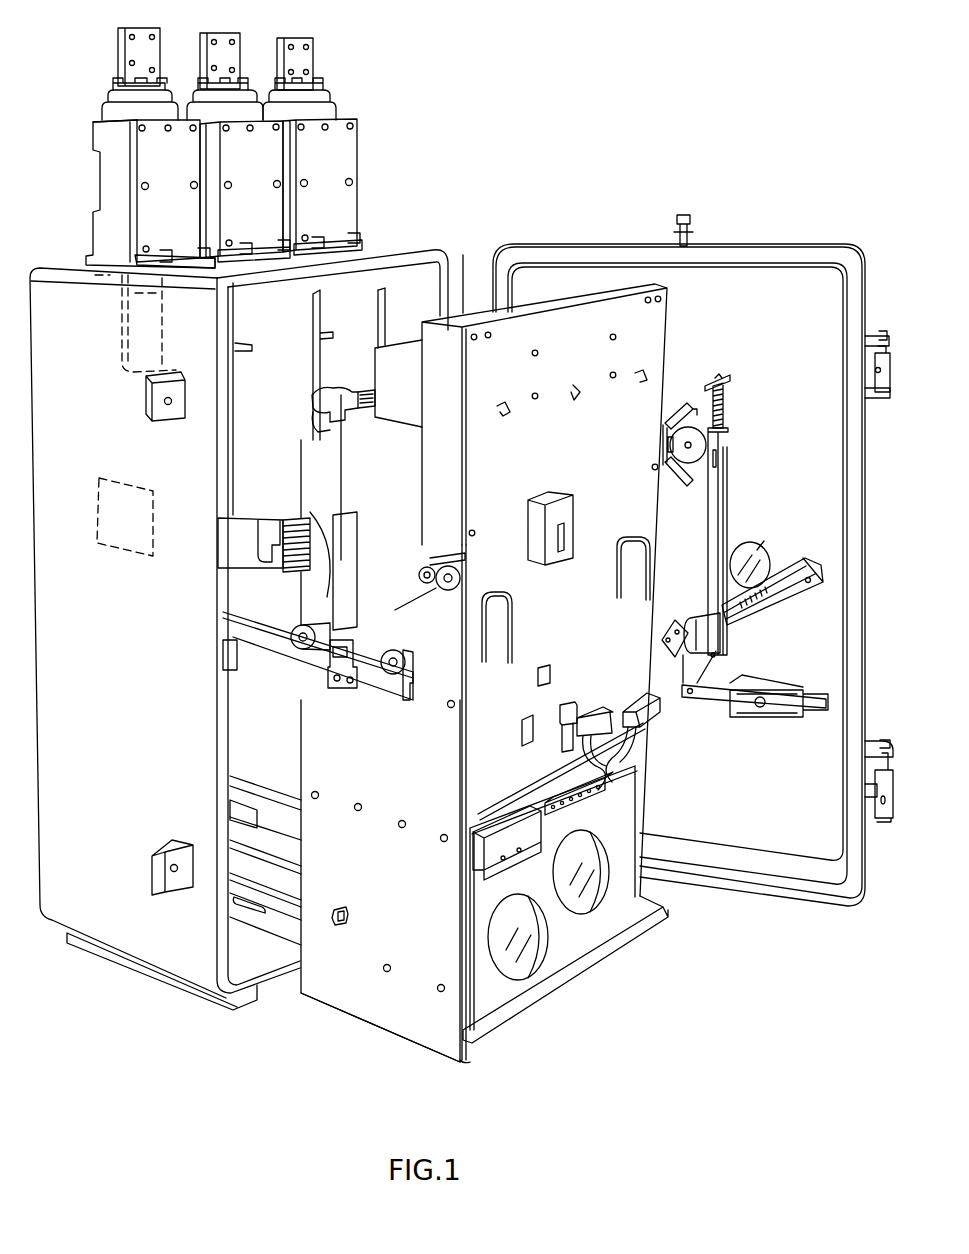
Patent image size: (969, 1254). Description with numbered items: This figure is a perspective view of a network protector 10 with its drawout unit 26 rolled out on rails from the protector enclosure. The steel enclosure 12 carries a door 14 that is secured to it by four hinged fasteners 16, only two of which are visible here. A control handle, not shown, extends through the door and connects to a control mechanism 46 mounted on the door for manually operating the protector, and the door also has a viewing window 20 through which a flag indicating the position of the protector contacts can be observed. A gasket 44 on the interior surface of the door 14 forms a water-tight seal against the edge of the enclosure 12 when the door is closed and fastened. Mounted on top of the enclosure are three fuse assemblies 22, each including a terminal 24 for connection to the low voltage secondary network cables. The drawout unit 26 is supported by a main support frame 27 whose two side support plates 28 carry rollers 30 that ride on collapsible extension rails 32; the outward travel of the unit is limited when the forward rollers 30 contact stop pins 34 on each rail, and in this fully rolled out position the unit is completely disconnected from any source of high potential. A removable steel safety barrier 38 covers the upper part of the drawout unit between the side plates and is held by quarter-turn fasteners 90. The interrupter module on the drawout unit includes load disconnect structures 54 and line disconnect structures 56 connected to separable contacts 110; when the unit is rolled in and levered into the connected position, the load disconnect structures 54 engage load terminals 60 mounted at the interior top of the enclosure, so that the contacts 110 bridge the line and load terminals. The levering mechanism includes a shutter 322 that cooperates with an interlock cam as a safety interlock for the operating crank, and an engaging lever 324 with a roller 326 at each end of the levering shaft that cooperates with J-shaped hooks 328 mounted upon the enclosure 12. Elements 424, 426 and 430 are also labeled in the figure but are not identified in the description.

The network protector 10 is at (432, 80).
The steel enclosure 12 is at (48, 278).
The door 14 is at (745, 248).
The hinged fasteners 16 is at (895, 385).
The viewing window 20 is at (755, 548).
The fuse assemblies 22 is at (148, 162).
The terminal 24 is at (222, 43).
The drawout unit 26 is at (385, 1066).
The main support frame 27 is at (472, 1035).
The side support plates 28 is at (345, 996).
The rollers 30 is at (313, 635).
The collapsible extension rails 32 is at (270, 664).
The stop pins 34 is at (406, 668).
The removable steel safety barrier 38 is at (548, 320).
The gasket 44 is at (618, 254).
The control mechanism 46 is at (722, 520).
The load disconnect structures 54 is at (313, 401).
The line disconnect structures 56 is at (289, 518).
The load terminals 60 is at (122, 318).
The quarter-turn fasteners 90 is at (640, 378).
The separable contacts 110 is at (451, 707).
The shutter 322 is at (572, 518).
The engaging lever 324 is at (455, 588).
The roller 326 is at (421, 572).
The J-shaped hooks 328 is at (245, 515).
The guide rails 424 is at (280, 938).
The mounting holes 426 is at (440, 984).
The nut 430 is at (342, 908).